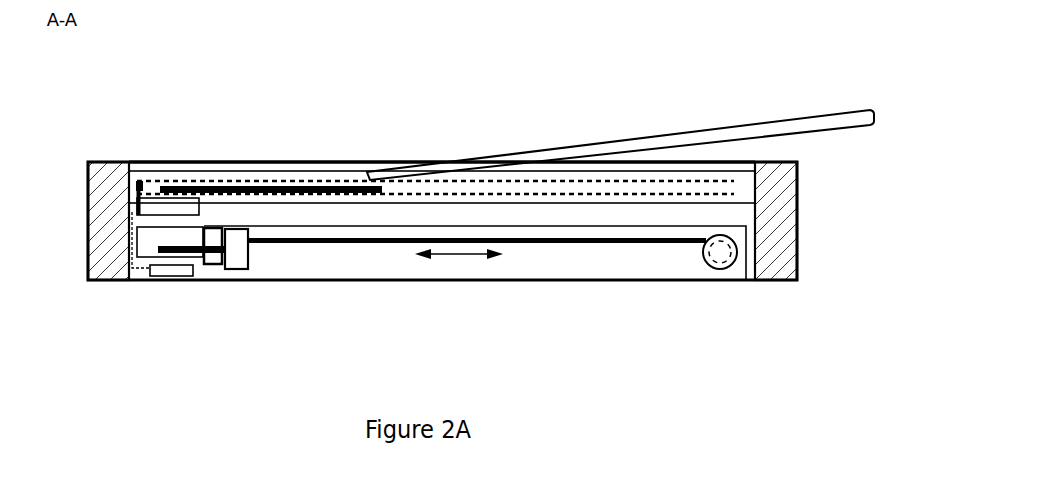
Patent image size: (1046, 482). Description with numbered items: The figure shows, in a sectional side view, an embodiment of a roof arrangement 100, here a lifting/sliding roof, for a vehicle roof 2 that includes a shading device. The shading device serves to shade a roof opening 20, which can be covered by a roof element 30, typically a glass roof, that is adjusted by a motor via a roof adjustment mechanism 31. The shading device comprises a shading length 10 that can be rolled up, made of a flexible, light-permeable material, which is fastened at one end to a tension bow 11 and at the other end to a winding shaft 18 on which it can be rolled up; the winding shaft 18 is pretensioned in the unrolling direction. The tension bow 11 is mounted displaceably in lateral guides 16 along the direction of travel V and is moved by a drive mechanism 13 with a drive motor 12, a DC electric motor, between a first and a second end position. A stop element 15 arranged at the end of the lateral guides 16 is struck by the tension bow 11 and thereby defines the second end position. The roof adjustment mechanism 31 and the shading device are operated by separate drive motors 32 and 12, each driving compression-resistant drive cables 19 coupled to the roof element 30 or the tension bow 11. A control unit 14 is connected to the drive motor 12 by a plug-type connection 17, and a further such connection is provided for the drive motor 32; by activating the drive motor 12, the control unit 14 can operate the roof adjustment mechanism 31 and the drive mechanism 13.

The roof arrangement 100 is at (238, 76).
The vehicle roof 2 is at (92, 163).
The roof opening 20 is at (146, 154).
The roof adjustment mechanism 31 is at (429, 125).
The roof element 30 is at (812, 117).
The drive cables 19 is at (208, 183).
The drive motor 32 is at (138, 207).
The drive mechanism 13 is at (184, 322).
The drive motor 12 is at (150, 243).
The plug-type connection 17 is at (147, 270).
The control unit 14 is at (173, 277).
The stop element 15 is at (219, 270).
The tension bow 11 is at (253, 268).
The lateral guides 16 is at (562, 262).
The shading length 10 is at (631, 245).
The winding shaft 18 is at (736, 270).
The direction of travel V is at (465, 258).